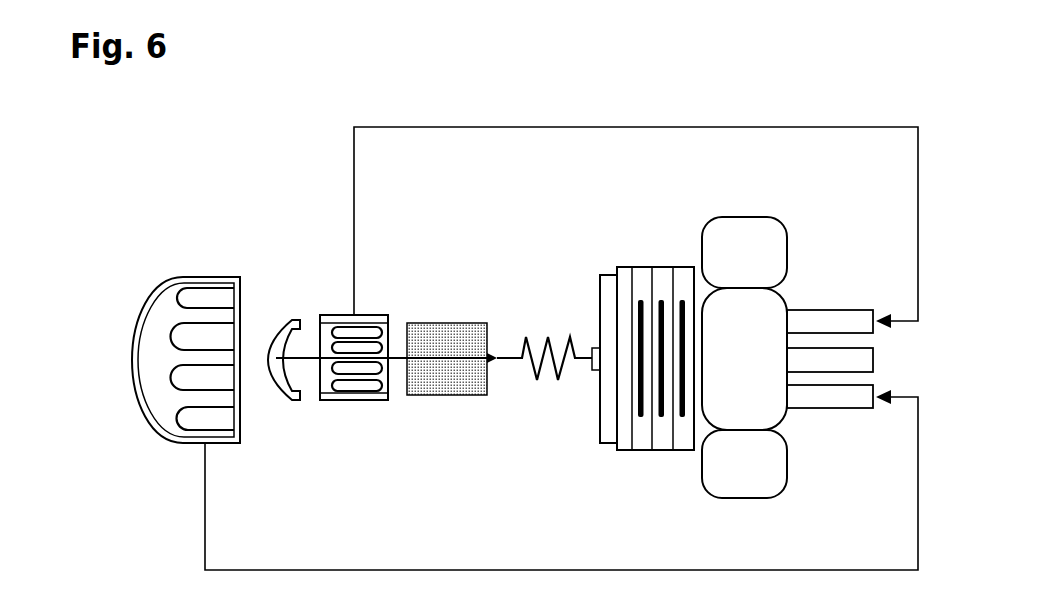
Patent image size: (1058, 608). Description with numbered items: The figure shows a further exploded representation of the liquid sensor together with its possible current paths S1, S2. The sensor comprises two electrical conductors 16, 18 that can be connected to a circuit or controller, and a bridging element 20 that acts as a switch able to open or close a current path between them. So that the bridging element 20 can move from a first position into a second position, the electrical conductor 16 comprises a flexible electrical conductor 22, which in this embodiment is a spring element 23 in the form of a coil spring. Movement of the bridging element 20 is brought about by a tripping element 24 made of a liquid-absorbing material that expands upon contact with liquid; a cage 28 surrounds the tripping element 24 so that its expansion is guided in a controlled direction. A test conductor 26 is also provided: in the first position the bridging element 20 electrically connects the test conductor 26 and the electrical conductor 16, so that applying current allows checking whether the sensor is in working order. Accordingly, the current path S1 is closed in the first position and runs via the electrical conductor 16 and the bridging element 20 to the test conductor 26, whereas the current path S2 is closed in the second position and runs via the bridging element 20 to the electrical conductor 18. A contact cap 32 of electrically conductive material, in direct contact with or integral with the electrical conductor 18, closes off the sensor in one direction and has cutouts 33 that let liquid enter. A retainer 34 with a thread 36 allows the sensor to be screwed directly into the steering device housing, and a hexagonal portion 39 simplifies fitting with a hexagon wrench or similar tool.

The electrical conductor 16 is at (862, 358).
The electrical conductor 18 is at (825, 398).
The bridging element 20 is at (277, 328).
The flexible electrical conductor 22 is at (548, 298).
The spring element 23 is at (527, 337).
The tripping element 24 is at (434, 330).
The test conductor 26 is at (823, 320).
The cage 28 is at (373, 318).
The contact cap 32 is at (131, 345).
The cutouts 33 is at (213, 333).
The retainer 34 is at (647, 305).
The thread 36 is at (640, 267).
The hexagonal portion 39 is at (740, 217).
The current path S1 is at (648, 127).
The current path S2 is at (485, 570).